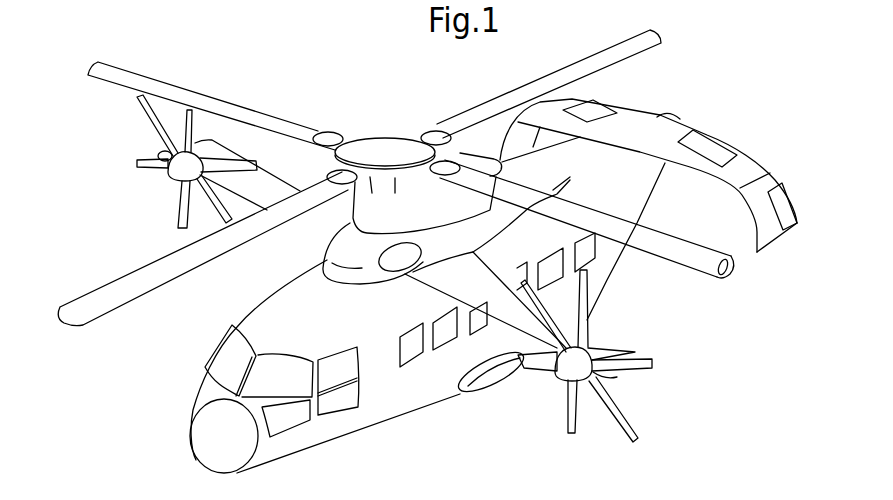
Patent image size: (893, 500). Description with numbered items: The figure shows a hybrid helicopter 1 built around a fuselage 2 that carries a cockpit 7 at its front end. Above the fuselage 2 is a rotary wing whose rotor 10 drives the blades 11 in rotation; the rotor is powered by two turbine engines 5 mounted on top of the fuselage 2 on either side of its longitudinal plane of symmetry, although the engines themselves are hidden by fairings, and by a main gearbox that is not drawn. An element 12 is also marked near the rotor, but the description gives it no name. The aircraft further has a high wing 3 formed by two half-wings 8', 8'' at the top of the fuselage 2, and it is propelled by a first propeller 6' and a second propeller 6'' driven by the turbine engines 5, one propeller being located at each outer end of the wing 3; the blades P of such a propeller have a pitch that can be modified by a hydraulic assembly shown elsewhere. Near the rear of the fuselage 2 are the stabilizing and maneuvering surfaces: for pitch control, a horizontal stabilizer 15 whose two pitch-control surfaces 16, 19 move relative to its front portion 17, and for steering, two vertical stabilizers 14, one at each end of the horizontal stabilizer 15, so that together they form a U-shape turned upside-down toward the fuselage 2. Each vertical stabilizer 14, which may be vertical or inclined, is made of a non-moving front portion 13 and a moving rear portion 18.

The hybrid helicopter 1 is at (452, 442).
The fuselage 2 is at (377, 423).
The high wing 3 is at (313, 241).
The turbine engines 5 is at (347, 118).
The first propeller 6' is at (192, 161).
The second propeller 6'' is at (585, 375).
The cockpit 7 is at (213, 354).
The half-wing 8' is at (247, 142).
The half-wing 8'' is at (475, 300).
The rotor 10 is at (653, 258).
The blades 11 is at (100, 297).
The rotor hub 12 is at (380, 188).
The non-moving front portion 13 is at (767, 239).
The vertical stabilizers 14 is at (788, 181).
The horizontal stabilizer 15 is at (735, 141).
The pitch-control surface 16 is at (700, 138).
The front portion 17 is at (712, 167).
The moving rear portion 18 is at (777, 208).
The pitch-control surface 19 is at (608, 108).
The blades of a propeller P is at (653, 365).